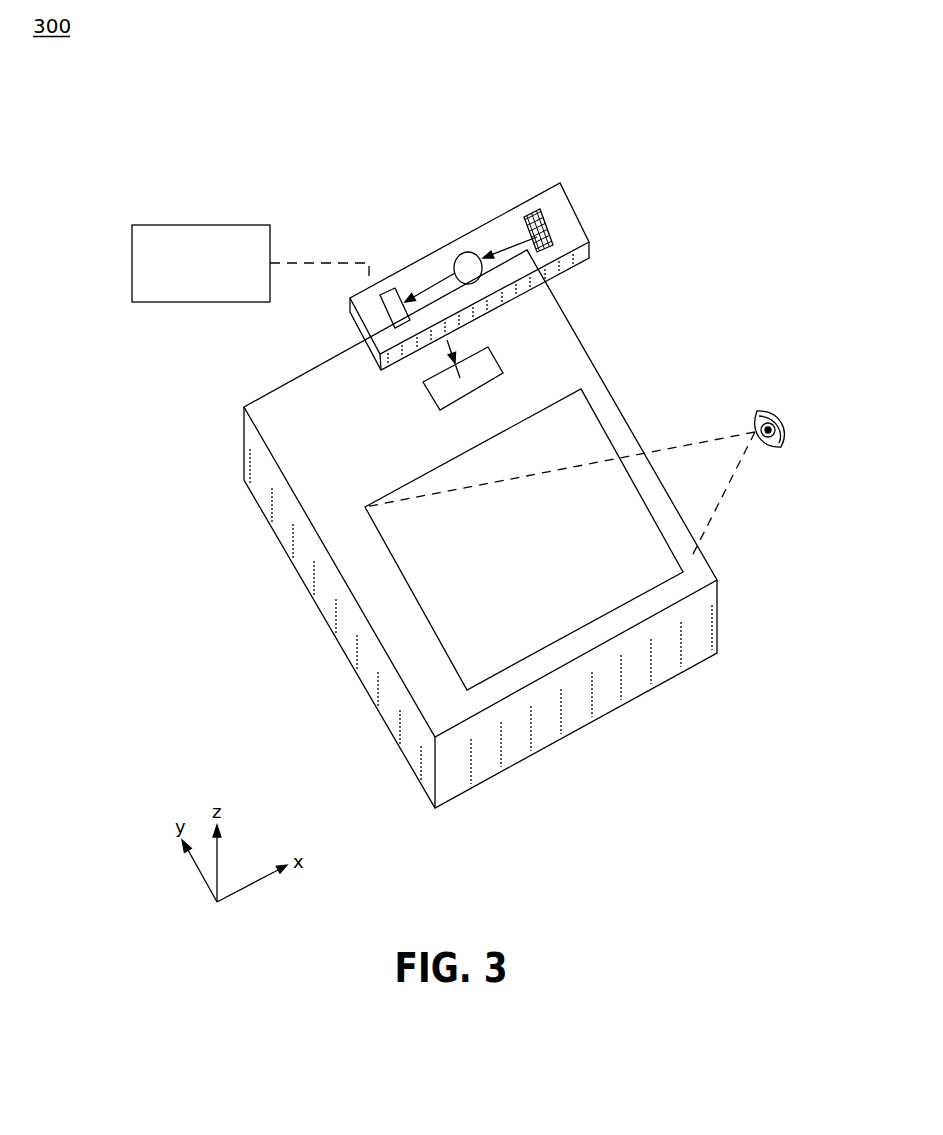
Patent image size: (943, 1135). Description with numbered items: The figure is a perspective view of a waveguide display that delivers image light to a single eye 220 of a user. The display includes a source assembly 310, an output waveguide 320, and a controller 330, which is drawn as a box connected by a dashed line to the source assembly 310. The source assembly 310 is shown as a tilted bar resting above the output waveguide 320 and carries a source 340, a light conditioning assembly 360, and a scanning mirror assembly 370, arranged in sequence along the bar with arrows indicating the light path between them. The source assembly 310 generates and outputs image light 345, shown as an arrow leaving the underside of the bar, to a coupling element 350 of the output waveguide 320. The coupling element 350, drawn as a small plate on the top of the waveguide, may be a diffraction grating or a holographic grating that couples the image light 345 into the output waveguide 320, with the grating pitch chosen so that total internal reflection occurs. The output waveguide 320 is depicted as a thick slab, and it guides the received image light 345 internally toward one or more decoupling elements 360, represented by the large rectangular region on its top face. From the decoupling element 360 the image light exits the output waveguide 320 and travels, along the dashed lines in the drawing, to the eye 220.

The eye 220 is at (778, 445).
The source assembly 310 is at (567, 218).
The output waveguide 320 is at (410, 648).
The controller 330 is at (192, 225).
The source 340 is at (533, 217).
The image light 345 is at (463, 368).
The coupling element 350 is at (492, 373).
The light conditioning assembly / decoupling element 360 is at (482, 655).
The scanning mirror assembly 370 is at (388, 288).